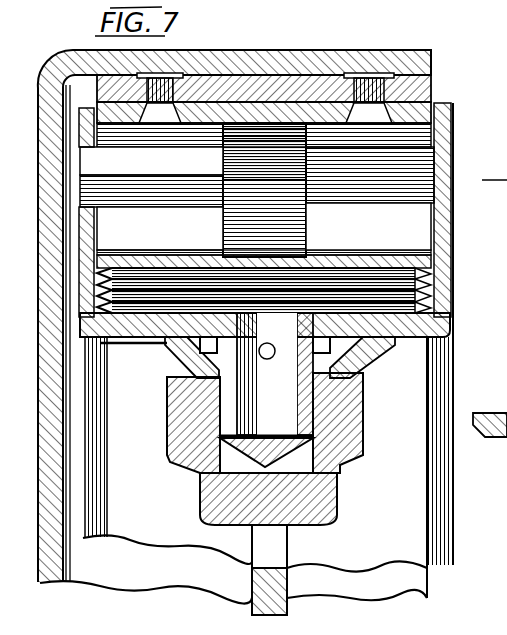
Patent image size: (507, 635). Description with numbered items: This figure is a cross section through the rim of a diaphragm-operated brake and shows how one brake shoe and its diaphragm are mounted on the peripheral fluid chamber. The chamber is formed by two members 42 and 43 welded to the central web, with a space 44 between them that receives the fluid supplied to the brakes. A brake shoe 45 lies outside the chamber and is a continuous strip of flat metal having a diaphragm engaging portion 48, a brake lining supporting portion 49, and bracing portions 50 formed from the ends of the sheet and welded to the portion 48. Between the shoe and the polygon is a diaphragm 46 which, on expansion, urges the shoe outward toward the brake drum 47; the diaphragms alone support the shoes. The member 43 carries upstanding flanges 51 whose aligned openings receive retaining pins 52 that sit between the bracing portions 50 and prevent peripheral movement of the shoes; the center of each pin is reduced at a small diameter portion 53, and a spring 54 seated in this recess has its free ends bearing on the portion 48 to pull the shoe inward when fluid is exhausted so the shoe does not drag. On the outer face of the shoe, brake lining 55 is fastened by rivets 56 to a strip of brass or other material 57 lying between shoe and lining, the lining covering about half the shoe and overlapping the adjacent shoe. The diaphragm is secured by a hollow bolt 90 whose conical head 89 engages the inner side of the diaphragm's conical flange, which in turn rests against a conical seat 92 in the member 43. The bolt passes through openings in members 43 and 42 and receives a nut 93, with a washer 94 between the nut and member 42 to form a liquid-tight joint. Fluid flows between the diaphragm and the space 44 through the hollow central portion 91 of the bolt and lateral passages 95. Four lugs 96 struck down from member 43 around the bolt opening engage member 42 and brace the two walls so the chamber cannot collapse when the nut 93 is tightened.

The peripheral chamber member 42 is at (432, 338).
The peripheral chamber member 43 is at (424, 295).
The space 44 is at (353, 402).
The brake shoe 45 is at (288, 74).
The diaphragm 46 is at (128, 266).
The brake drum 47 is at (432, 52).
The diaphragm engaging portion 48 is at (369, 258).
The brake lining supporting portion 49 is at (452, 107).
The bracing portion 50 is at (325, 136).
The upstanding flange 51 is at (100, 221).
The retaining pin 52 is at (436, 158).
The small diameter portion 53 is at (269, 158).
The spring 54 is at (233, 233).
The brake lining 55 is at (432, 84).
The rivet 56 is at (183, 76).
The strip of brass or other material 57 is at (127, 127).
The conical head 89 is at (310, 323).
The hollow bolt 90 is at (315, 427).
The hollow central portion 91 is at (207, 476).
The conical seat 92 is at (350, 341).
The nut 93 is at (317, 497).
The washer 94 is at (187, 387).
The lateral passage 95 is at (310, 343).
The lug 96 is at (182, 360).